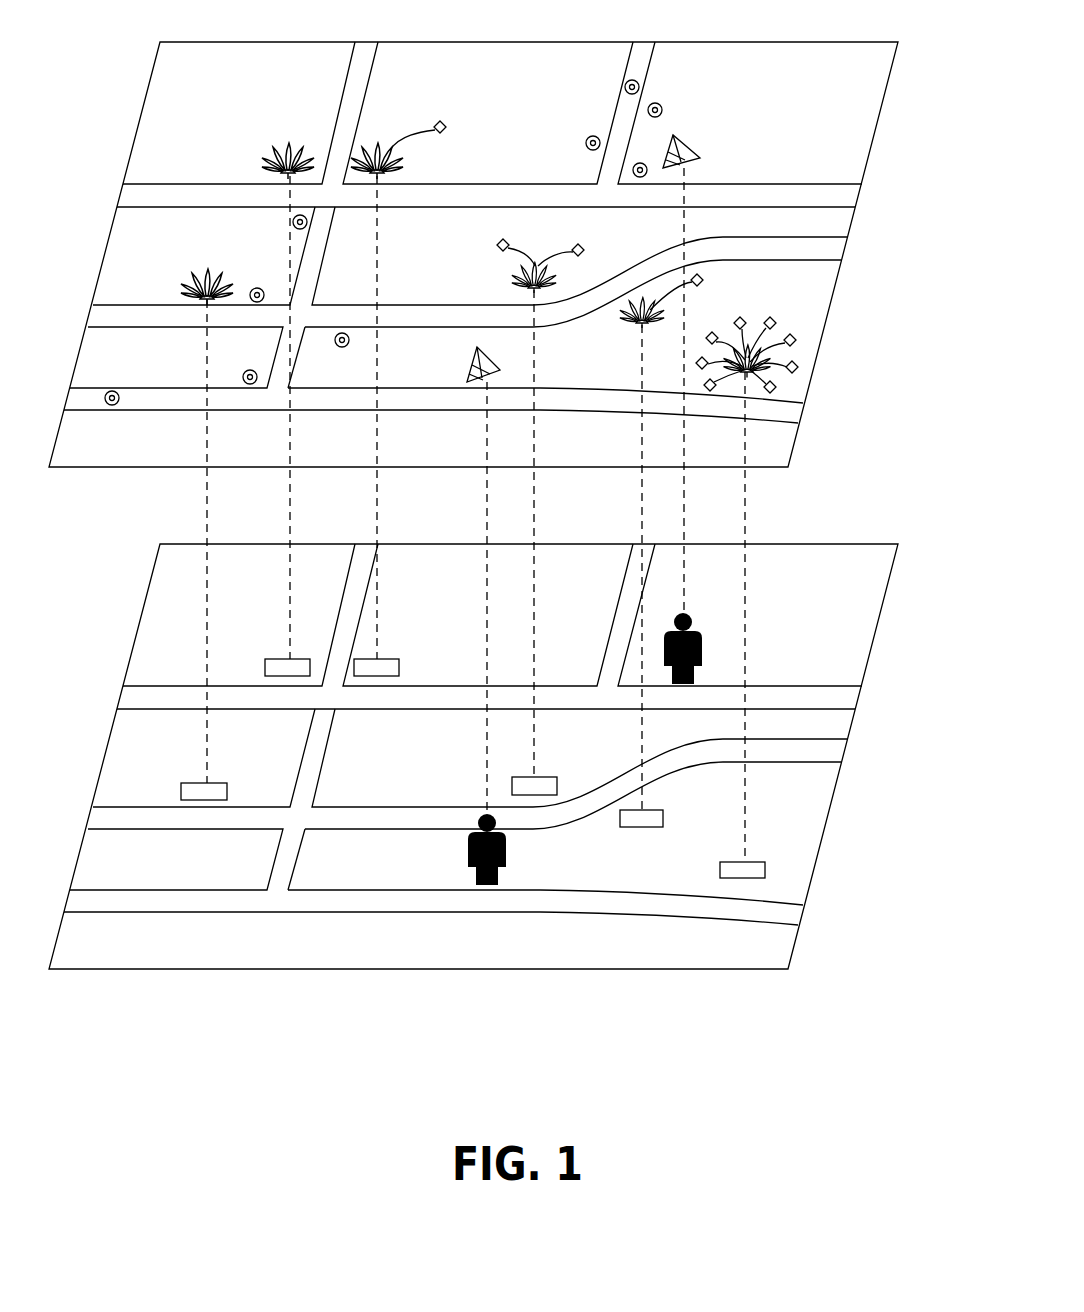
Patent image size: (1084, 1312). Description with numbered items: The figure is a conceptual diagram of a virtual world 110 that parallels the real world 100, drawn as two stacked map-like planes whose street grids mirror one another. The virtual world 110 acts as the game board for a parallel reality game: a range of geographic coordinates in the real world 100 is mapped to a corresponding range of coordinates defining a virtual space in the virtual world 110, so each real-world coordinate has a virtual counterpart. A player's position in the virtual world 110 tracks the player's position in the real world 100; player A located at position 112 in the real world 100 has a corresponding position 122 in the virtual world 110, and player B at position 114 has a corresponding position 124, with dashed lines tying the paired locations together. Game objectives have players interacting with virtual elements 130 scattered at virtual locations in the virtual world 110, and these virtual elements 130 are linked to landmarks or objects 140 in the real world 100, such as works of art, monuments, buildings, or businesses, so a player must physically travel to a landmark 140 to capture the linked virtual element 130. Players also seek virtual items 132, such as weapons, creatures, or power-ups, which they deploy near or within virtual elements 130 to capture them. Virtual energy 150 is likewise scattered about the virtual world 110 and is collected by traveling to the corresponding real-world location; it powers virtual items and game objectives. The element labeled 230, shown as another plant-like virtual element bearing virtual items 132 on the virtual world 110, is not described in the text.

The real world 100 is at (878, 627).
The virtual world 110 is at (867, 163).
The position of player A 112 is at (468, 855).
The position of player B 114 is at (702, 638).
The corresponding position of player A 122 is at (500, 370).
The corresponding position of player B 124 is at (701, 158).
The virtual element 130 is at (288, 162).
The virtual item 132 is at (445, 127).
The real-world landmark or object 140 is at (267, 659).
The virtual energy 150 is at (664, 110).
The virtual element (plant with items) 230 is at (536, 266).